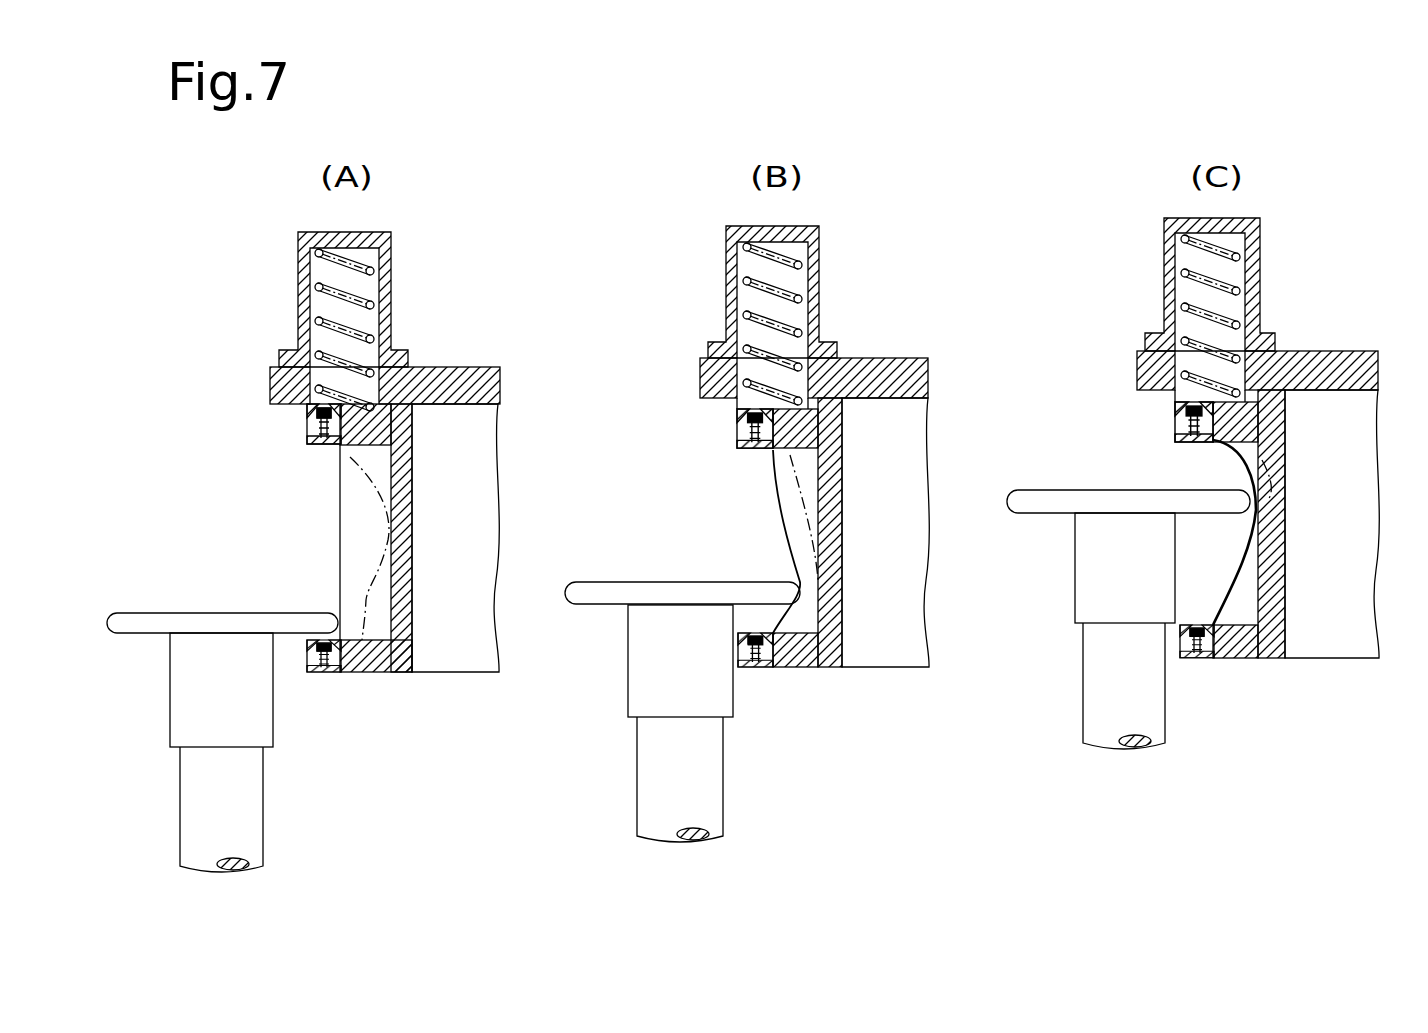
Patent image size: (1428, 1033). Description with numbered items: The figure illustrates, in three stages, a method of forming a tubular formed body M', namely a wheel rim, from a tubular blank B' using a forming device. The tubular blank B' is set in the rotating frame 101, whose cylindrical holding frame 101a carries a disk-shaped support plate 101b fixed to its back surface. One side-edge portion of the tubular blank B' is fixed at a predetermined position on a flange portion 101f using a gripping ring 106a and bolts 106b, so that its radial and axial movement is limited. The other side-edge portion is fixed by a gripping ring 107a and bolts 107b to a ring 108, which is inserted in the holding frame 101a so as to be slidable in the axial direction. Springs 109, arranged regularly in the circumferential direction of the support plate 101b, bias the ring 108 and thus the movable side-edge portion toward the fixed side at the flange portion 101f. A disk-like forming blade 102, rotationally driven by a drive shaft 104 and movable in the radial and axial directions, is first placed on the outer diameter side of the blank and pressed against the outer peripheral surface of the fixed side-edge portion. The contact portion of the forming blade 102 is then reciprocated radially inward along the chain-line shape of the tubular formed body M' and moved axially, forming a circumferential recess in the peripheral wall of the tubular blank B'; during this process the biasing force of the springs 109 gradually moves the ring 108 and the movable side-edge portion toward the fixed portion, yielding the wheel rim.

The rotating frame 101 is at (412, 673).
The holding frame 101a is at (402, 570).
The support plate 101b is at (488, 365).
The flange portion 101f is at (378, 675).
The forming blade 102 is at (168, 613).
The drive shaft 104 is at (262, 845).
The gripping ring 106a is at (305, 660).
The bolts 106b is at (332, 663).
The gripping ring 107a is at (308, 440).
The bolts 107b is at (312, 412).
The ring 108 is at (377, 430).
The springs 109 is at (360, 292).
The tubular blank B' is at (758, 540).
The tubular formed body M' is at (814, 547).